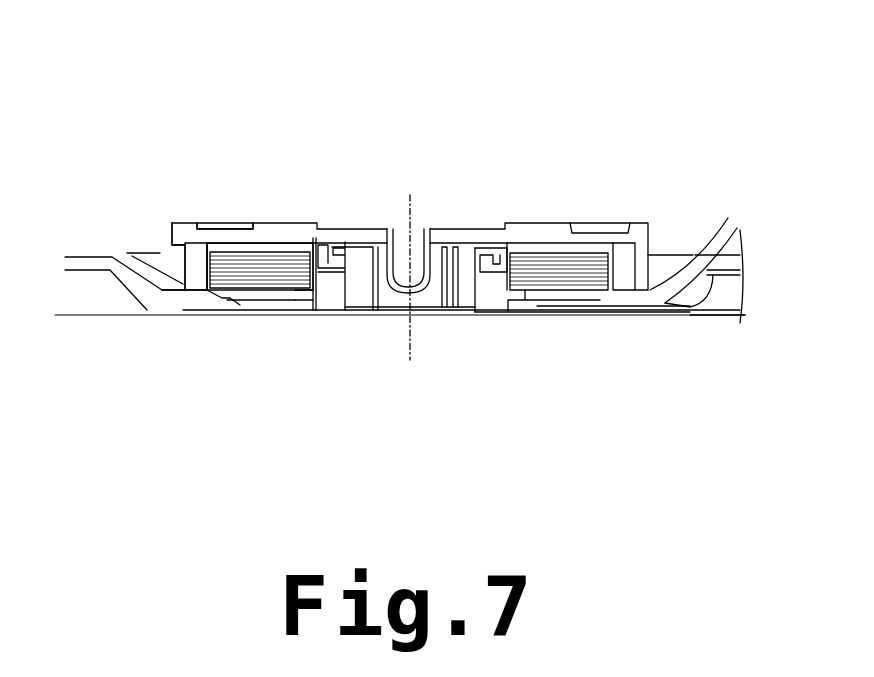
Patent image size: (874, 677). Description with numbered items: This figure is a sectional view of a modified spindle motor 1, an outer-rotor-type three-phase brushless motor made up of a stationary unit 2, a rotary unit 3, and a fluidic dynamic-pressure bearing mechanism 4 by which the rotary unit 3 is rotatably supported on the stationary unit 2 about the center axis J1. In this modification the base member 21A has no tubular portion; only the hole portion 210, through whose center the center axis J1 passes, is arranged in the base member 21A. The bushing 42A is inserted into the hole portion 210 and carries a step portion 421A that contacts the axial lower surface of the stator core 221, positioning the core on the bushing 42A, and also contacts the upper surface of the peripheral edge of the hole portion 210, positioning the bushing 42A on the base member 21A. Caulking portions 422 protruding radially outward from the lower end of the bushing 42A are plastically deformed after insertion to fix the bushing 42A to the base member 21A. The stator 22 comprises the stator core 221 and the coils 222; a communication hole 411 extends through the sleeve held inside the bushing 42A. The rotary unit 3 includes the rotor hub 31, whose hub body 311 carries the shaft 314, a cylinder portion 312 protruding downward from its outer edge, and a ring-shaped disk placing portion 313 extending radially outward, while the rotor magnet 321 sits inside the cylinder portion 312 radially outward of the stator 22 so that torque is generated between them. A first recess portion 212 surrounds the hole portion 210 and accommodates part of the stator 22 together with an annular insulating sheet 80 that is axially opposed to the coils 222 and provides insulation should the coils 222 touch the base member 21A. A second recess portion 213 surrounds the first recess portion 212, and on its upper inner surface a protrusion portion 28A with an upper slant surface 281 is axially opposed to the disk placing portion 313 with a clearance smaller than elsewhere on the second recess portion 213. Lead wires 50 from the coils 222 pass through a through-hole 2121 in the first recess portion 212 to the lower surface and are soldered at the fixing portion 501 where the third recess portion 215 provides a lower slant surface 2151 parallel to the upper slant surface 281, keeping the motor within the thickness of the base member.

The spindle motor 1 is at (99, 33).
The stationary unit 2 is at (254, 424).
The rotary unit 3 is at (292, 91).
The bearing mechanism 4 is at (357, 426).
The base member 21A is at (63, 335).
The stator 22 is at (521, 243).
The stator core 221 is at (229, 240).
The coils 222 is at (262, 252).
The rotor hub 31 is at (303, 240).
The hub body 311 is at (530, 243).
The cylinder portion 312 is at (172, 245).
The disk placing portion 313 is at (138, 252).
The shaft 314 is at (391, 230).
The rotor magnet 321 is at (198, 240).
The bushing 42A is at (336, 248).
The communication hole 411 is at (455, 243).
The step portion 421A is at (310, 295).
The caulking portions 422 is at (307, 310).
The center axis J1 is at (412, 193).
The protrusion portion 28A is at (677, 285).
The upper slant surface 281 is at (707, 232).
The lower slant surface 2151 is at (724, 226).
The third recess portion 215 is at (713, 312).
The second recess portion 213 is at (182, 290).
The first recess portion 212 is at (295, 310).
The hole portion 210 is at (473, 312).
The through-hole 2121 is at (543, 312).
The lead wires 50 is at (620, 312).
The fixing portion 501 is at (694, 312).
The insulating sheet 80 is at (225, 300).